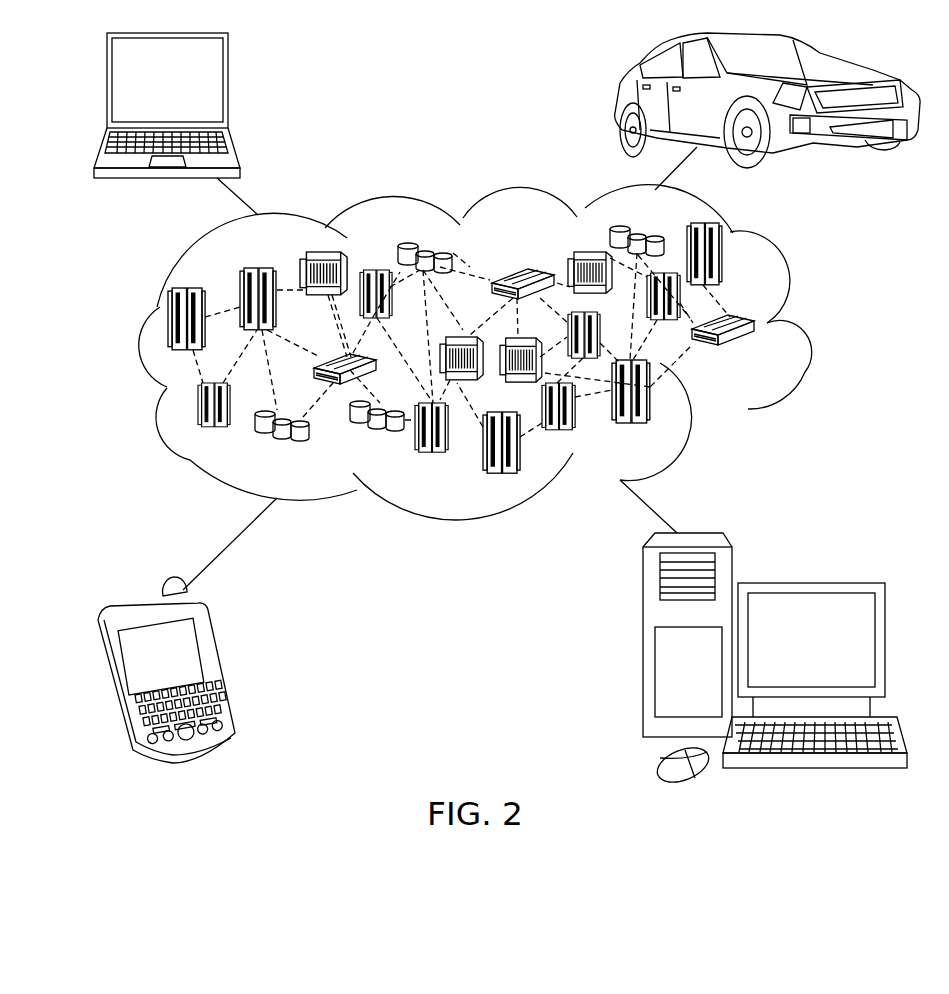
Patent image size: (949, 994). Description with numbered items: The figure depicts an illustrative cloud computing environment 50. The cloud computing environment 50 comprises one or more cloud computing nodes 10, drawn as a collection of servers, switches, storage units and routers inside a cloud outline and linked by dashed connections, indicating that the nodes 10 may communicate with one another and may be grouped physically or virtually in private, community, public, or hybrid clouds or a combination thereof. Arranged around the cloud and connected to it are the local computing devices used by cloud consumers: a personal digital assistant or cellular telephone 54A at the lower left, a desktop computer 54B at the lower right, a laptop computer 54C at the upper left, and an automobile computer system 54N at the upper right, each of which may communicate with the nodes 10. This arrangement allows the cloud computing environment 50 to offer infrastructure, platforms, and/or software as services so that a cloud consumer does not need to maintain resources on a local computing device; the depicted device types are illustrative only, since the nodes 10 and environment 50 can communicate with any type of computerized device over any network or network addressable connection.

The cloud computing nodes 10 is at (765, 358).
The cloud computing environment 50 is at (812, 328).
The personal digital assistant (PDA) or cellular telephone 54A is at (218, 667).
The desktop computer 54B is at (810, 583).
The laptop computer 54C is at (228, 85).
The automobile computer system 54N is at (617, 102).